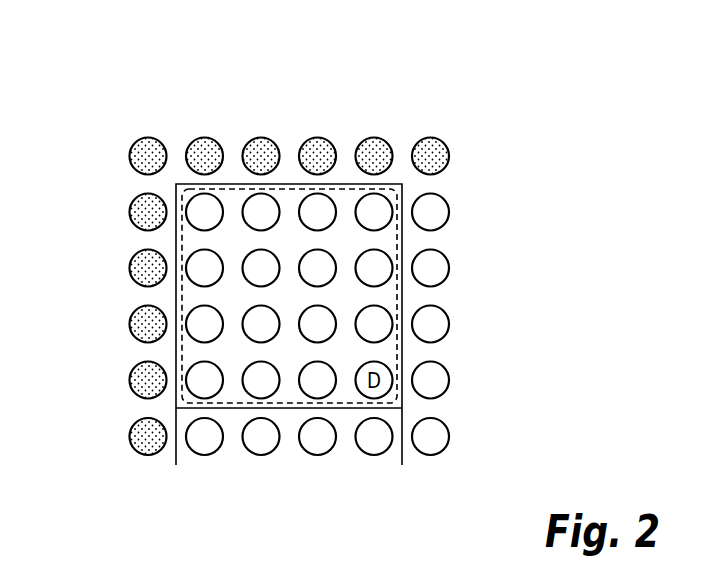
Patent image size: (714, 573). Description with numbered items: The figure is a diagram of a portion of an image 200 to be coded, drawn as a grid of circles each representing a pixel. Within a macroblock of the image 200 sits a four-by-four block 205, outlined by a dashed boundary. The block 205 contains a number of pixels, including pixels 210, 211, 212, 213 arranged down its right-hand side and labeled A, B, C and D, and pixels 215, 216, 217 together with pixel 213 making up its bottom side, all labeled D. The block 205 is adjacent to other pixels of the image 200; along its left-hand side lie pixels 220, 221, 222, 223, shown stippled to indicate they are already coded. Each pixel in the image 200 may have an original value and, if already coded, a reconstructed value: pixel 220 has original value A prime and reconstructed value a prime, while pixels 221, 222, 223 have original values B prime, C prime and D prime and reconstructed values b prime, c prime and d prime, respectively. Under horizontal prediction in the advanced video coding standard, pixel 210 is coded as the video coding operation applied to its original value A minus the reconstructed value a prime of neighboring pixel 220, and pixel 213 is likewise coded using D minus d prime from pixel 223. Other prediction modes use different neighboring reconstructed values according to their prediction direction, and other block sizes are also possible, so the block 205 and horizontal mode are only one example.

The image 200 is at (104, 61).
The 4×4 block 205 is at (337, 189).
The pixel 210 is at (401, 193).
The pixel 211 is at (388, 254).
The pixel 212 is at (388, 310).
The pixel 213 is at (388, 366).
The pixel 215 is at (218, 393).
The pixel 216 is at (274, 393).
The pixel 217 is at (328, 393).
The pixel 220 is at (130, 210).
The pixel 221 is at (130, 266).
The pixel 222 is at (130, 322).
The pixel 223 is at (130, 378).